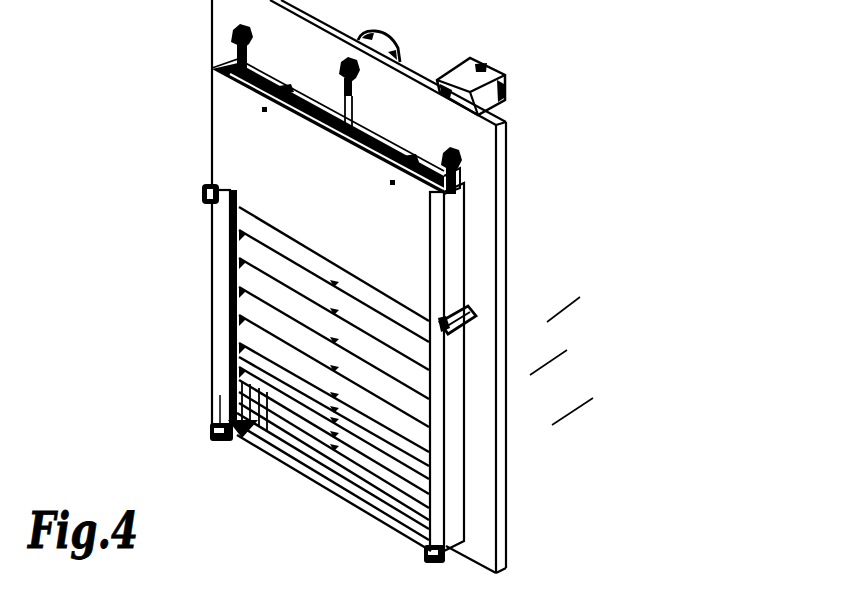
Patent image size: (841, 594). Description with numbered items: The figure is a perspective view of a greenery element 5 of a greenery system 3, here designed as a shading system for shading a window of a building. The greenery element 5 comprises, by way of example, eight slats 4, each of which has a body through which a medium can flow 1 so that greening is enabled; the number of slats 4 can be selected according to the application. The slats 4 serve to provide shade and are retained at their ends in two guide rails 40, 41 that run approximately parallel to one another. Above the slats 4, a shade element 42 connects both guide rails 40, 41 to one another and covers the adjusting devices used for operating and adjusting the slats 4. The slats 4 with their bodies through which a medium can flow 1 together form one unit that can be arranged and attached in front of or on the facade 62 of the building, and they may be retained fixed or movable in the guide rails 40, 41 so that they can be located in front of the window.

The greenery system 3 is at (180, 112).
The greenery element 5 is at (200, 284).
The body through which a medium can flow 1 is at (248, 330).
The slat 4 is at (243, 372).
The guide rail 40 is at (220, 402).
The guide rail 41 is at (452, 500).
The shade element 42 is at (423, 248).
The facade 62 is at (582, 429).